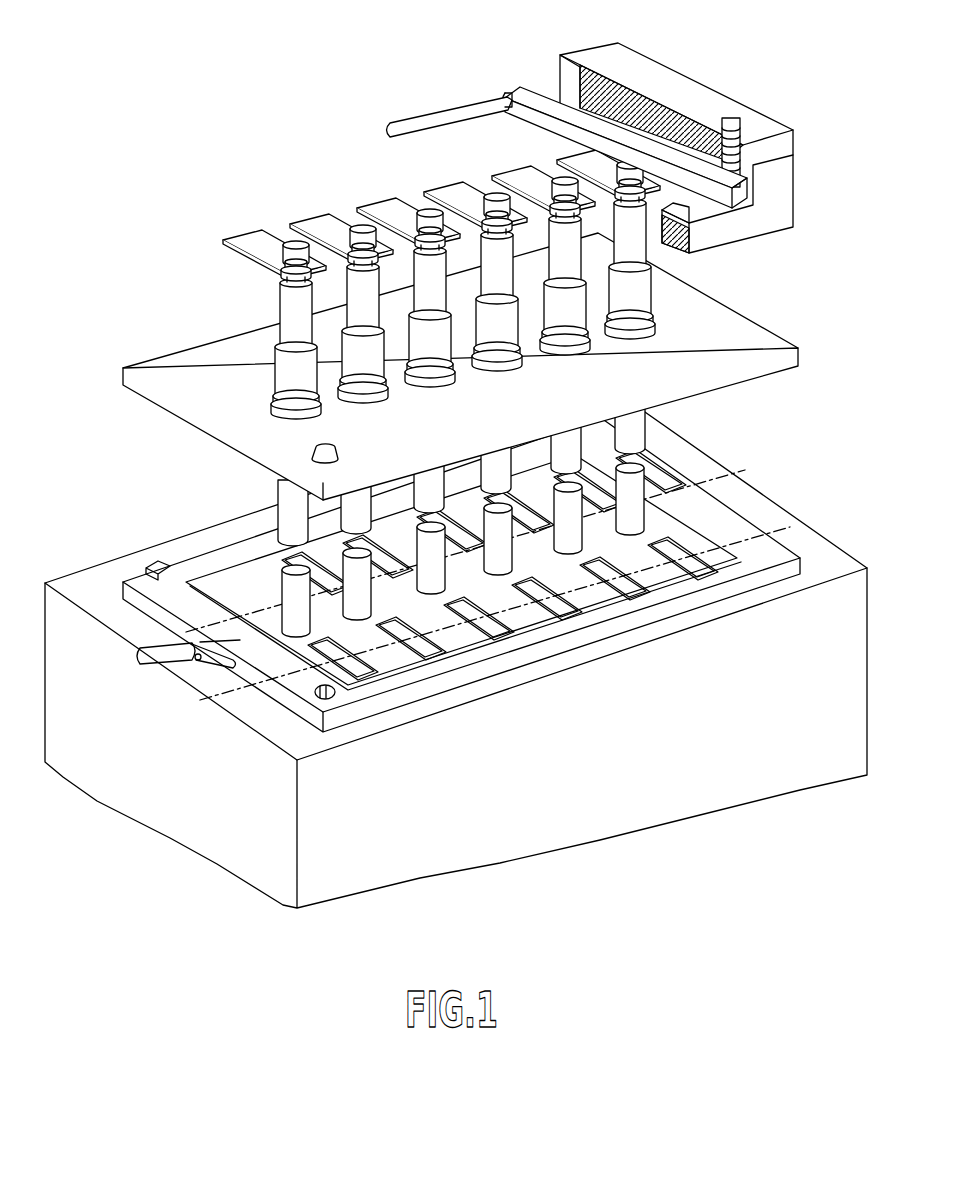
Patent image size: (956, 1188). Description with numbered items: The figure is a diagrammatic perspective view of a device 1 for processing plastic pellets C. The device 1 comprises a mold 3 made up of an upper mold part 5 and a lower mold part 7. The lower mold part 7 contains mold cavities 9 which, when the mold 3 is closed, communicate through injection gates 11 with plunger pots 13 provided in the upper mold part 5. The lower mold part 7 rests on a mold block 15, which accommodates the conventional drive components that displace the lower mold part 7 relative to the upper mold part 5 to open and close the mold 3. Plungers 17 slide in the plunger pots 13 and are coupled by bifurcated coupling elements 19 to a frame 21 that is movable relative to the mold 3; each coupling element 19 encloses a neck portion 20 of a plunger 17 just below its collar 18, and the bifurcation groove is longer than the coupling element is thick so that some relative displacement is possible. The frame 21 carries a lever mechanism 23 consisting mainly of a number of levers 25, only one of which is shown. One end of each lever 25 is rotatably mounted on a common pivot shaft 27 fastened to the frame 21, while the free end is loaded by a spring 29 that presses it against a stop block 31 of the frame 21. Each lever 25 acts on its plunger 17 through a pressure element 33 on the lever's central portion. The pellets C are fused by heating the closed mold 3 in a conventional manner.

The device 1 is at (207, 133).
The mold 3 is at (207, 550).
The upper mold part 5 is at (757, 328).
The lower mold part 7 is at (750, 530).
The mold cavities 9 is at (680, 550).
The injection gates 11 is at (650, 520).
The plunger pots 13 is at (638, 293).
The mold block 15 is at (832, 547).
The plungers 17 is at (280, 304).
The collar 18 is at (352, 228).
The coupling elements 19 is at (240, 232).
The neck portion 20 is at (390, 250).
The frame 21 is at (797, 172).
The lever mechanism 23 is at (514, 82).
The levers 25 is at (523, 117).
The pivot shaft 27 is at (413, 118).
The spring 29 is at (743, 122).
The stop block 31 is at (748, 242).
The pressure element 33 is at (560, 157).
The plastic pellets C is at (267, 570).